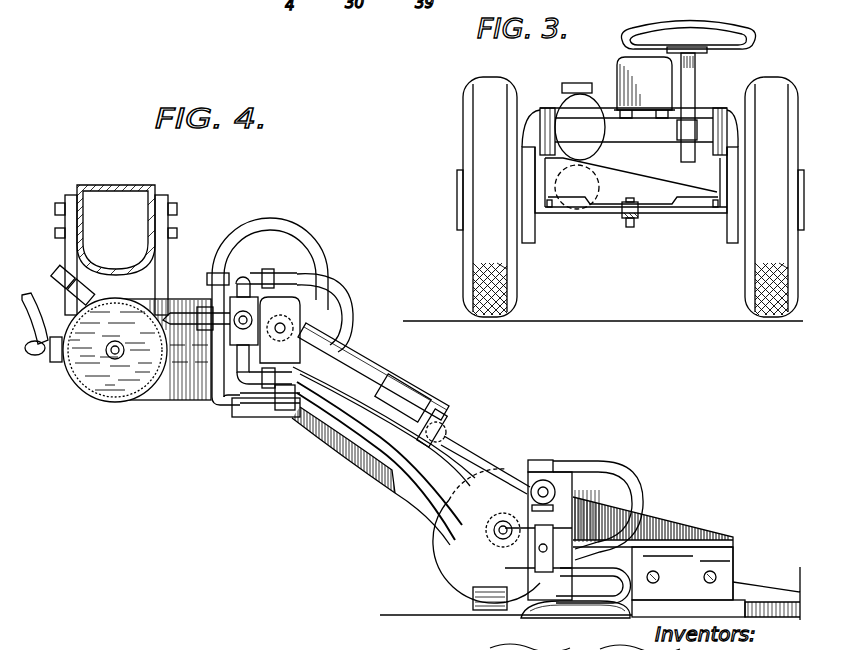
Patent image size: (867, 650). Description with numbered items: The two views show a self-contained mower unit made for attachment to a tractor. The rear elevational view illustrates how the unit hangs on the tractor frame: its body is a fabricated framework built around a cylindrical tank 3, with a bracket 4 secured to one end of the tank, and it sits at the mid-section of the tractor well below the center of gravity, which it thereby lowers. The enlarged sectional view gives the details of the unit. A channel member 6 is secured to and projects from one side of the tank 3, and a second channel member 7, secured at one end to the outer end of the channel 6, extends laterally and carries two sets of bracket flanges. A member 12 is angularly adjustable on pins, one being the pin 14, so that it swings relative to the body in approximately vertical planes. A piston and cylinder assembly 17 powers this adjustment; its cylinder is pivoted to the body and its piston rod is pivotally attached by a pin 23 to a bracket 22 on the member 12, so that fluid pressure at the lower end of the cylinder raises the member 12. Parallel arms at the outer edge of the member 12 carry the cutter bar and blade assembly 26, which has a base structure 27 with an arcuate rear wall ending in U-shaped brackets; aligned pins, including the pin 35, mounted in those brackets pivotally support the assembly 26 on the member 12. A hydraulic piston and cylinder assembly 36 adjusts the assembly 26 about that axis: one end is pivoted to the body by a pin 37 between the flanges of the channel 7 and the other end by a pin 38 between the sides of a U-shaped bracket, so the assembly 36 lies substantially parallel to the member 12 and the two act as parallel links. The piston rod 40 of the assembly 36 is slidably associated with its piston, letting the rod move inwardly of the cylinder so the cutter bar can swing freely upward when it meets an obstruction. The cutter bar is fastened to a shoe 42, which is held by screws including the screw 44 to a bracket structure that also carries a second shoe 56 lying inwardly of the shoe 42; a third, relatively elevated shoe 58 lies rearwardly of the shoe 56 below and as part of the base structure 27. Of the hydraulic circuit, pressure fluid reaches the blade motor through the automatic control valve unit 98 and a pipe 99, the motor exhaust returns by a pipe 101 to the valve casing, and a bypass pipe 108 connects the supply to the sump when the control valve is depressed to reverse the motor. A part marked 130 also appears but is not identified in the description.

In FIG. 3, the cylindrical tank 3 is at (599, 187).
In FIG. 4, the cylindrical tank 3 is at (84, 392).
In FIG. 3, the bracket 4 is at (607, 207).
In FIG. 4, the channel member 6 is at (168, 402).
In FIG. 4, the second channel member 7 is at (253, 417).
In FIG. 4, the member 12 is at (352, 453).
In FIG. 4, the pin 14 is at (283, 413).
In FIG. 4, the piston and cylinder assembly 17 is at (362, 352).
In FIG. 4, the bracket 22 is at (433, 457).
In FIG. 4, the pin 23 is at (446, 426).
In FIG. 4, the cutter bar and blade assembly 26 is at (762, 576).
In FIG. 4, the base structure 27 is at (445, 557).
In FIG. 4, the pin 35 is at (507, 518).
In FIG. 4, the hydraulic piston and cylinder assembly 36 is at (417, 397).
In FIG. 4, the pin 37 is at (281, 324).
In FIG. 4, the pin 38 is at (545, 488).
In FIG. 4, the piston rod 40 is at (482, 448).
In FIG. 4, the shoe 42 is at (640, 610).
In FIG. 4, the screw 44 is at (704, 580).
In FIG. 4, the second shoe 56 is at (541, 620).
In FIG. 4, the third shoe 58 is at (473, 602).
In FIG. 4, the automatic control valve unit 98 is at (237, 338).
In FIG. 4, the pipe 99 is at (405, 460).
In FIG. 4, the pipe 101 is at (240, 223).
In FIG. 4, the bypass pipe 108 is at (335, 290).
In FIG. 4, the wedge member 130 is at (680, 520).